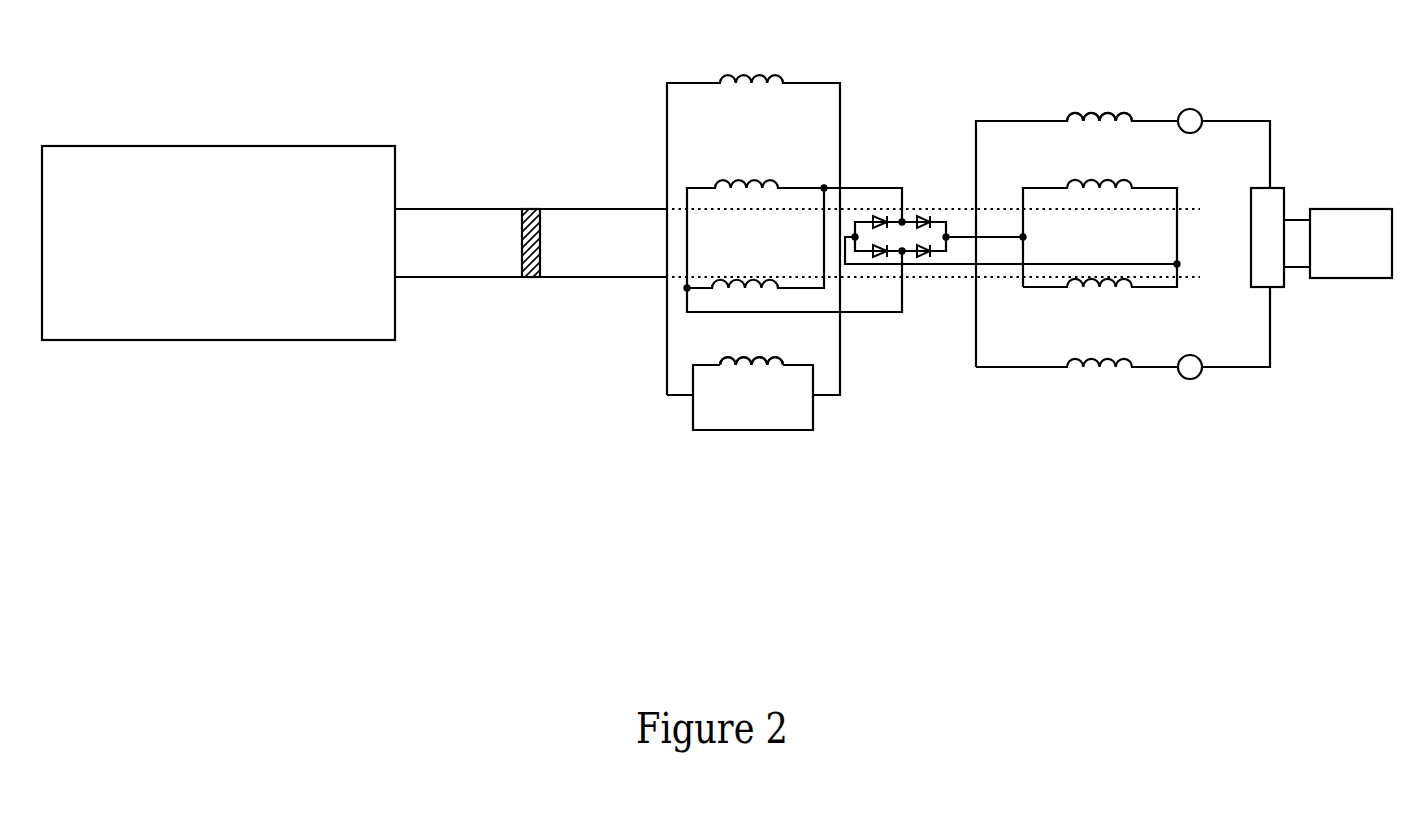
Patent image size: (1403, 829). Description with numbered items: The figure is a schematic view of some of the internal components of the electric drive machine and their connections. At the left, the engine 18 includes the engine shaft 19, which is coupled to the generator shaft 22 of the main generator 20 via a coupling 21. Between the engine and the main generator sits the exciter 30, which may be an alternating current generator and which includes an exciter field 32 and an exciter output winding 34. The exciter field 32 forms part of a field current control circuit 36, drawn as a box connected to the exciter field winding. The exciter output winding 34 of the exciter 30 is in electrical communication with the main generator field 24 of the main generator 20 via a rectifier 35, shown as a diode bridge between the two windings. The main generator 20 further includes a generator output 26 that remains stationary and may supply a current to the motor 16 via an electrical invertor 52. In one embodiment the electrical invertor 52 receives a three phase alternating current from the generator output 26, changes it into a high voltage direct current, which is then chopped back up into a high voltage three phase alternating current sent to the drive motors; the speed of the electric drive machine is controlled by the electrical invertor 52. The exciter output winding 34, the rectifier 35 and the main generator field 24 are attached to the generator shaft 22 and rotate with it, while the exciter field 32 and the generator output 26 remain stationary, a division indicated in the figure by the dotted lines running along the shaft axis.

The motor 16 is at (1375, 268).
The engine 18 is at (355, 332).
The engine shaft 19 is at (453, 218).
The main generator 20 is at (967, 107).
The coupling 21 is at (530, 278).
The generator shaft 22 is at (590, 218).
The main generator field 24 is at (1088, 296).
The generator output 26 is at (1104, 113).
The exciter 30 is at (686, 160).
The exciter field 32 is at (742, 328).
The exciter output winding 34 is at (747, 188).
The rectifier 35 is at (936, 222).
The field current control circuit 36 is at (795, 420).
The electrical invertor 52 is at (1280, 188).